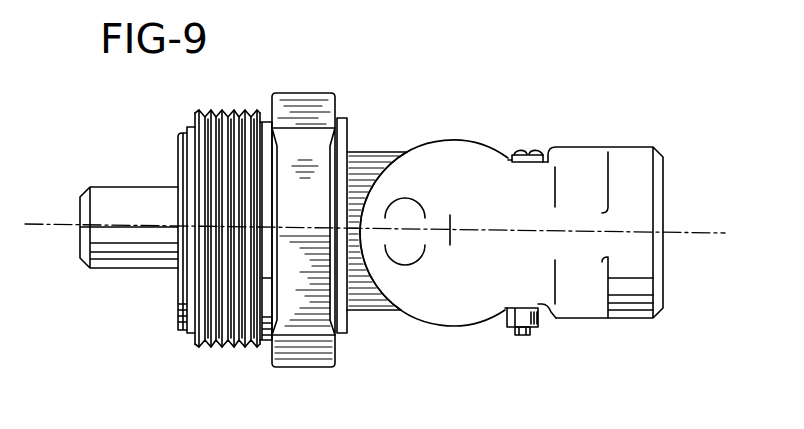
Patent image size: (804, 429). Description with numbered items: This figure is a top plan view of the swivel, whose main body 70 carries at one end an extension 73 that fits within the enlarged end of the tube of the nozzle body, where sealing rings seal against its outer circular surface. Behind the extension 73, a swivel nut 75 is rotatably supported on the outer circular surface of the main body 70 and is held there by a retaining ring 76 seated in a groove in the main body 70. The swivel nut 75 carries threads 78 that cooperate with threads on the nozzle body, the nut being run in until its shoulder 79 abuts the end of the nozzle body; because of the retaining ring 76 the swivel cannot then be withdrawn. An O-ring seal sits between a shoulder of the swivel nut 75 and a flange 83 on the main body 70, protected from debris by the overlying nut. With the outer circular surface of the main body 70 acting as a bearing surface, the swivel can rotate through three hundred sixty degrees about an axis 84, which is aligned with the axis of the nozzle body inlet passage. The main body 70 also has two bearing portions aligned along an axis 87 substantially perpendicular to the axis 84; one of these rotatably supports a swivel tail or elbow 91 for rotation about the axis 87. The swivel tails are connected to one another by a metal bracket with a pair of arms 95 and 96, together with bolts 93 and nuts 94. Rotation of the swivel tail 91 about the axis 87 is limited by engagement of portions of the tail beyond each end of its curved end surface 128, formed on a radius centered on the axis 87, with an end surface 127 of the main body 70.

The main body 70 is at (468, 239).
The extension 73 is at (132, 188).
The swivel nut 75 is at (303, 96).
The retaining ring 76 is at (178, 327).
The threads 78 is at (213, 128).
The shoulder 79 is at (268, 345).
The flange 83 is at (337, 335).
The axis 84 is at (710, 233).
The axis 87 is at (452, 233).
The swivel tail 91 is at (637, 156).
The bolts 93 is at (522, 150).
The nuts 94 is at (520, 338).
The arm 95 is at (546, 151).
The arm 96 is at (525, 308).
The end surface 127 is at (370, 268).
The end surface 128 is at (368, 197).